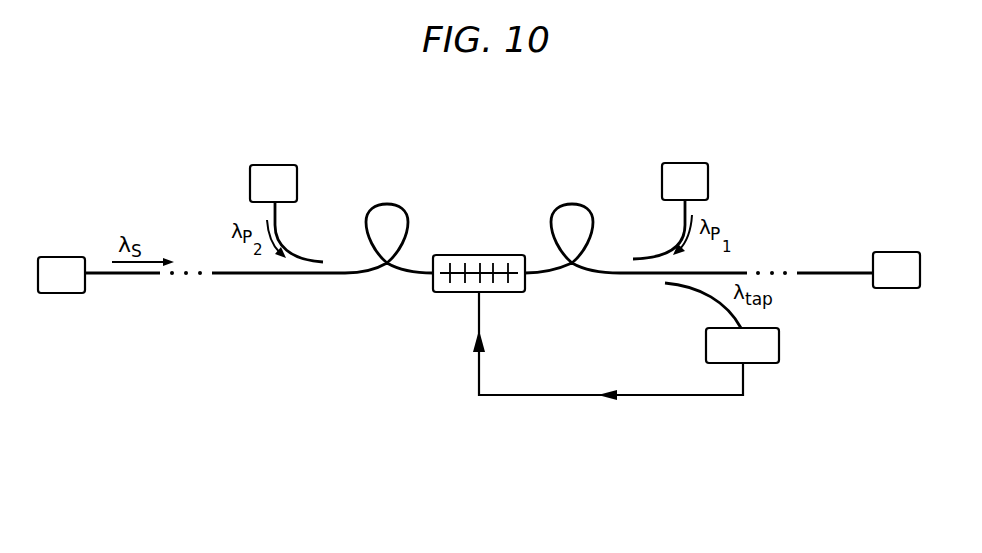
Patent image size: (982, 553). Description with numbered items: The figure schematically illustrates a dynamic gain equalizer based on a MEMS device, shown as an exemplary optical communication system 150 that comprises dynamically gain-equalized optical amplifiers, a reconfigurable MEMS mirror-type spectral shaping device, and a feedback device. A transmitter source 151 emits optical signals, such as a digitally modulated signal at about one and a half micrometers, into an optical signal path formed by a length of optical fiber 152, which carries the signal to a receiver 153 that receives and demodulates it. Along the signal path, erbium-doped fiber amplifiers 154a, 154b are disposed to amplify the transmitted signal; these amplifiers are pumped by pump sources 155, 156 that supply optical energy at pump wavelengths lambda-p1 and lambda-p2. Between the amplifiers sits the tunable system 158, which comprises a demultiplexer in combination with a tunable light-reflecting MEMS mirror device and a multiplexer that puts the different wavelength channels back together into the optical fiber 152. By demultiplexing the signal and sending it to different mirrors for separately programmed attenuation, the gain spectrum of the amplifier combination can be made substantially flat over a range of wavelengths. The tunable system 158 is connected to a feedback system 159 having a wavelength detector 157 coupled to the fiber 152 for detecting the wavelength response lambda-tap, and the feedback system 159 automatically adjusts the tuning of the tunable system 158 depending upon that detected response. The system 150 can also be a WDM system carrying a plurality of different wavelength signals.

The optical communication system 150 is at (827, 163).
The transmitter source 151 is at (57, 288).
The optical fiber 152 is at (138, 276).
The receiver 153 is at (892, 284).
The erbium-doped fiber amplifier 154a is at (377, 206).
The erbium-doped fiber amplifier 154b is at (566, 206).
The pump source 155 is at (681, 170).
The pump source 156 is at (270, 170).
The wavelength detector 157 is at (780, 346).
The tunable system 158 is at (477, 256).
The feedback system 159 is at (478, 372).